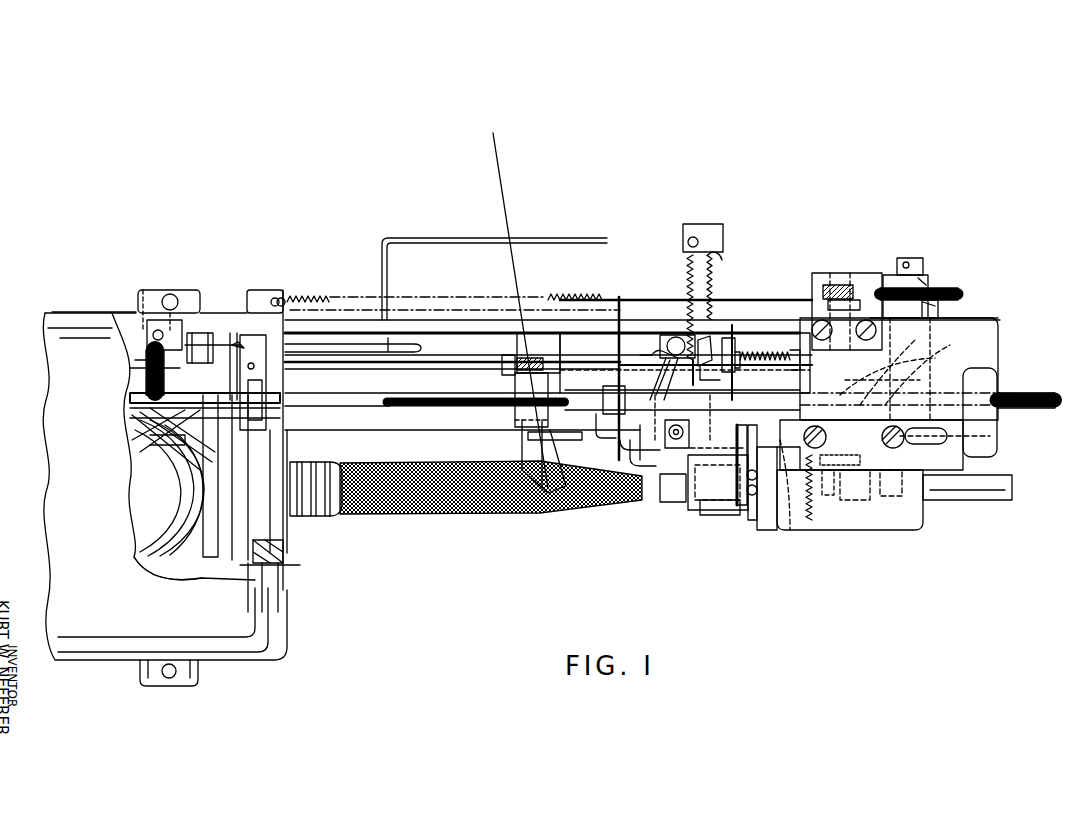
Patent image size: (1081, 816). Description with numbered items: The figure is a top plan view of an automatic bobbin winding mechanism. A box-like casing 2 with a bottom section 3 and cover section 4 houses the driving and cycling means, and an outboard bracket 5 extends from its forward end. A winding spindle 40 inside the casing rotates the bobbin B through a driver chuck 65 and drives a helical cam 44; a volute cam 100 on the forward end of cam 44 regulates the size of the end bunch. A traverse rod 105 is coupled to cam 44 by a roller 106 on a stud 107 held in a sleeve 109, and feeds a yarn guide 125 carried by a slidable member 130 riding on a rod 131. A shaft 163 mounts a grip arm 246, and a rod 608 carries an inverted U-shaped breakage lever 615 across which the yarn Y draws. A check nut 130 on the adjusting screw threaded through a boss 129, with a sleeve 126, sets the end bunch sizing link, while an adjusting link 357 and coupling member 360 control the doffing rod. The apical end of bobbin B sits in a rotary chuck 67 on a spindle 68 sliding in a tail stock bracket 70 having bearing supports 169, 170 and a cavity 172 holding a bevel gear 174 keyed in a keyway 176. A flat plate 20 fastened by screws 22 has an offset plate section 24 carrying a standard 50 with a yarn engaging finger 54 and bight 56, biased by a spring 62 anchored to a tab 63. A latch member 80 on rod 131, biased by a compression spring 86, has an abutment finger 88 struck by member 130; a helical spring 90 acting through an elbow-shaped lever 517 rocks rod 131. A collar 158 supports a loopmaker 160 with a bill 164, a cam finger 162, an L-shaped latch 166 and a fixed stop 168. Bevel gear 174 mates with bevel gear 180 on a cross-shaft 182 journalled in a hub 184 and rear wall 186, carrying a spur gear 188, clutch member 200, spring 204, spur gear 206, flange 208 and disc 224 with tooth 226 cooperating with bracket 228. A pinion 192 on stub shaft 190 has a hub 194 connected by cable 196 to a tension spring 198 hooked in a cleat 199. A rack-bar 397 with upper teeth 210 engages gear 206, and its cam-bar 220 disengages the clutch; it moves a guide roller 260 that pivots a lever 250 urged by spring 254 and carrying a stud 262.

The casing 2 is at (93, 312).
The bottom section 3 is at (150, 567).
The cover section 4 is at (72, 440).
The outboard bracket 5 is at (998, 332).
The flat plate 20 is at (968, 462).
The screws 22 is at (803, 440).
The plate section 24 is at (790, 460).
The winding spindle 40 is at (224, 510).
The helical cam 44 is at (148, 498).
The standard 50 is at (662, 498).
The yarn engaging finger 54 is at (605, 435).
The bight 56 is at (634, 448).
The spring 62 is at (688, 265).
The tab 63 is at (688, 240).
The driver chuck 65 is at (296, 515).
The rotary chuck 67 is at (702, 516).
The rotary spindle 68 is at (768, 500).
The tail stock bracket 70 is at (920, 532).
The latch member 80 is at (722, 340).
The compression spring 86 is at (770, 360).
The abutment finger 88 is at (640, 355).
The helical spring 90 is at (236, 340).
The volute cam 100 is at (206, 560).
The traverse rod 105 is at (402, 396).
The roller 106 is at (148, 424).
The stud 107 is at (146, 380).
The sleeve 109 is at (130, 398).
The yarn guide 125 is at (522, 451).
The sleeve 126 is at (146, 365).
The boss 129 is at (140, 300).
The slidable member 130 is at (158, 298).
The rod 131 is at (456, 378).
The collar 158 is at (750, 520).
The loopmaker 160 is at (700, 510).
The cam finger 162 is at (690, 480).
The shaft 163 is at (596, 425).
The bill 164 is at (700, 490).
The L-shaped latch 166 is at (758, 520).
The fixed stop 168 is at (732, 505).
The bearing support 169 is at (792, 530).
The bearing support 170 is at (920, 525).
The cavity 172 is at (870, 522).
The bevel gear 174 is at (815, 525).
The keyway 176 is at (832, 520).
The bevel gear 180 is at (838, 505).
The cross-shaft 182 is at (820, 280).
The hub 184 is at (918, 497).
The rear wall 186 is at (988, 320).
The spur gear 188 is at (845, 300).
The stub shaft 190 is at (920, 246).
The pinion 192 is at (938, 296).
The hub 194 is at (940, 310).
The flexible cable 196 is at (580, 300).
The tension spring 198 is at (308, 300).
The cleat 199 is at (262, 293).
The saw-tooth clutch member 200 is at (850, 398).
The compression spring 204 is at (908, 361).
The spur gear 206 is at (940, 361).
The flange 208 is at (898, 365).
The teeth 210 is at (1040, 406).
The cam-bar 220 is at (900, 412).
The disc 224 is at (926, 280).
The tooth 226 is at (880, 288).
The right-angle bracket 228 is at (828, 288).
The grip arm 246 is at (619, 297).
The lever 250 is at (678, 338).
The spring 254 is at (705, 250).
The guide roller 260 is at (694, 455).
The stud 262 is at (670, 356).
The adjusting link 357 is at (155, 448).
The coupling member 360 is at (172, 455).
The rack-bar 397 is at (1056, 394).
The elbow-shaped lever 517 is at (243, 342).
The rod 608 is at (410, 345).
The breakage lever 615 is at (470, 243).
The bobbin B is at (343, 510).
The yarn Y is at (503, 178).